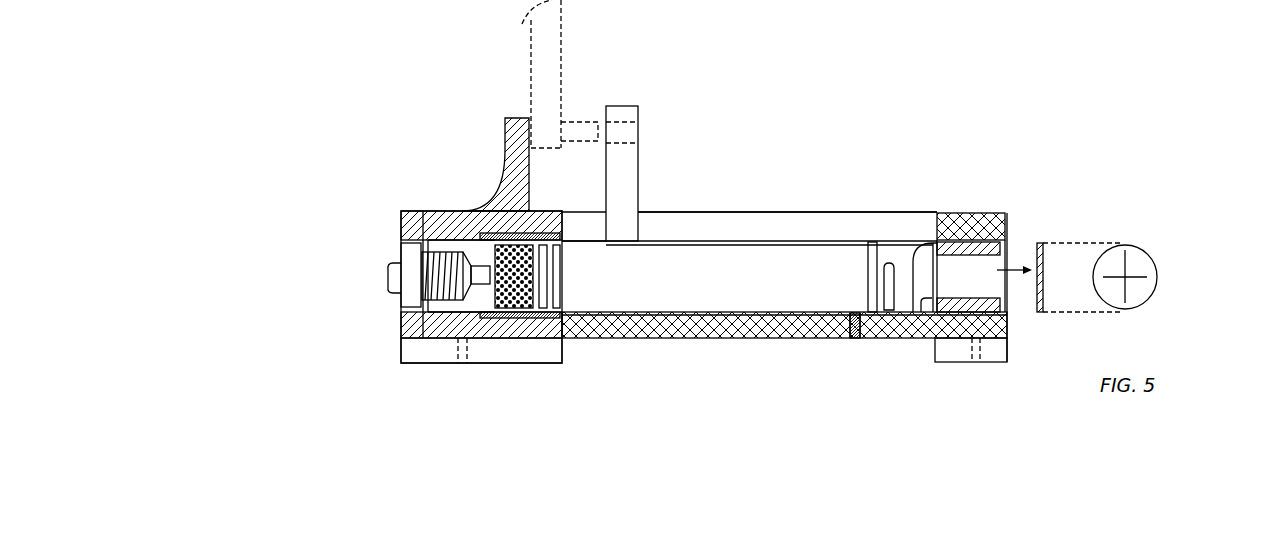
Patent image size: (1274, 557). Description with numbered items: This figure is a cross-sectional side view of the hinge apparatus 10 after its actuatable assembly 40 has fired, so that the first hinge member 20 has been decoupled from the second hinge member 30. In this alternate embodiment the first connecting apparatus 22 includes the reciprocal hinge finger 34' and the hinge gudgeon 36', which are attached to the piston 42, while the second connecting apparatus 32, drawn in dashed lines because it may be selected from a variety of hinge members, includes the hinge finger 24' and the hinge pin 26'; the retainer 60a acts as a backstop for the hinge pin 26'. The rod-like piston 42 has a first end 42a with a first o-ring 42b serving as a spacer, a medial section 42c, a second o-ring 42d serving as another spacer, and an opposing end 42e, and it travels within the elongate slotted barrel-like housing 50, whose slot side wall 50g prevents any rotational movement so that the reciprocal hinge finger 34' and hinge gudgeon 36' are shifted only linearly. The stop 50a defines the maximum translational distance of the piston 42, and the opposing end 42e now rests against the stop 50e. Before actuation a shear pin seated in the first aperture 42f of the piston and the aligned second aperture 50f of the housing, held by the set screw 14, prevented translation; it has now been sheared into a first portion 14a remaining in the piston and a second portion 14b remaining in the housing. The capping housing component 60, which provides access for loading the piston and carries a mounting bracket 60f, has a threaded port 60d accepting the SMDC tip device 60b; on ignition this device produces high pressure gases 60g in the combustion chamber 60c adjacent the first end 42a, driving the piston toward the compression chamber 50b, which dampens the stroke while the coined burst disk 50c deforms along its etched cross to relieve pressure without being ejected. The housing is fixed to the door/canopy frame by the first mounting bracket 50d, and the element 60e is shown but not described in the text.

The hinge apparatus 10 is at (901, 113).
The set screw 14 is at (857, 338).
The first portion of shear pin 14a is at (900, 253).
The second portion of shear pin 14b is at (853, 320).
The first hinge member 20 is at (730, 125).
The first connecting apparatus 22 is at (668, 153).
The hinge finger 24' is at (515, 74).
The hinge pin 26' is at (529, 100).
The second hinge member 30 is at (404, 26).
The second connecting apparatus 32 is at (455, 72).
The reciprocal hinge finger 34' is at (645, 173).
The hinge gudgeon 36' is at (649, 99).
The actuatable assembly 40 is at (700, 168).
The piston 42 is at (749, 254).
The first end of piston 42a is at (543, 305).
The first o-ring 42b is at (558, 273).
The medial section of piston 42c is at (666, 270).
The second o-ring 42d is at (872, 277).
The opposing end of piston 42e is at (935, 277).
The first aperture 42f is at (890, 267).
The elongate slotted barrel-like housing 50 is at (784, 325).
The stop 50a is at (937, 215).
The compression chamber 50b is at (982, 267).
The coined burst disk 50c is at (1130, 275).
The first mounting bracket 50d is at (990, 350).
The stop 50e is at (920, 312).
The second aperture 50f is at (855, 323).
The slot side wall 50g is at (720, 223).
The capping housing component 60 is at (481, 287).
The retainer 60a is at (508, 142).
The SMDC tip device 60b is at (437, 267).
The combustion chamber 60c is at (460, 218).
The threaded port 60d is at (441, 250).
The housing bottom wall 60e is at (432, 237).
The mounting bracket 60f is at (443, 350).
The high pressure gases 60g is at (497, 316).